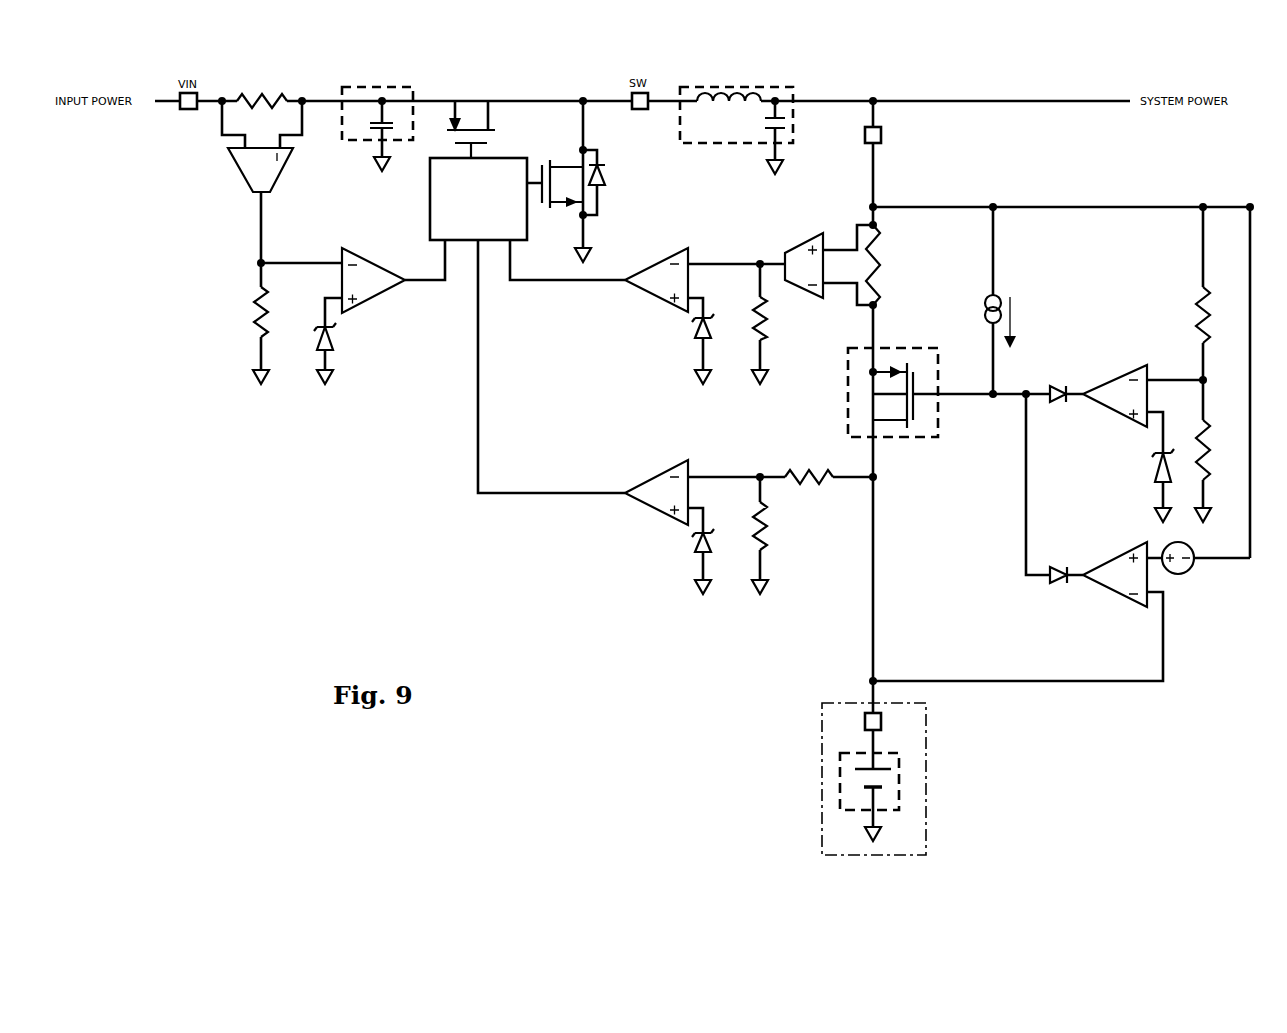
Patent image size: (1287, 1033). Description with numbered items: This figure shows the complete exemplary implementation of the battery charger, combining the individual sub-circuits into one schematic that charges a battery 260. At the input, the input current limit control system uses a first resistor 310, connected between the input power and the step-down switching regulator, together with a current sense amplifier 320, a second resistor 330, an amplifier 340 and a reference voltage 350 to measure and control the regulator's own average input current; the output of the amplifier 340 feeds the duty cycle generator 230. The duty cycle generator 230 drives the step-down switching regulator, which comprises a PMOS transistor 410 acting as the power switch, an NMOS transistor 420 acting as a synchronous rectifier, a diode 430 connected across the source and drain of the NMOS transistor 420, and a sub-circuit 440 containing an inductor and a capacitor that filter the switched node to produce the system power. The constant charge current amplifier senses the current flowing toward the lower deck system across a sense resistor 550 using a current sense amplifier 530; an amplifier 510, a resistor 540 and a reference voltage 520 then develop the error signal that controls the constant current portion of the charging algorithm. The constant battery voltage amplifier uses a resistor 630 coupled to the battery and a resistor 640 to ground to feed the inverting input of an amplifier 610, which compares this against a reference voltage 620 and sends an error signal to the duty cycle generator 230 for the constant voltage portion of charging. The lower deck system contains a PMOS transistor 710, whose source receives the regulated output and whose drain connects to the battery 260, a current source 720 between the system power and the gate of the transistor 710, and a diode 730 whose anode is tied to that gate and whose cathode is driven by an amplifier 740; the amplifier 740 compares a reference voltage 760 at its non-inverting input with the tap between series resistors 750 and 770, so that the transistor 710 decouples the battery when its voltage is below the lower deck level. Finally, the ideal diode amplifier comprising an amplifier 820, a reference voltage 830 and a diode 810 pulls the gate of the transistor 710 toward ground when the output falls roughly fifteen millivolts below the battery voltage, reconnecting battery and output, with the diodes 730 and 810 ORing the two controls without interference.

The resistor R1 310 is at (278, 90).
The current sense amplifier GM1 320 is at (237, 170).
The resistor R2 330 is at (253, 308).
The amplifier A1 340 is at (360, 252).
The reference voltage VREF1 350 is at (317, 347).
The PMOS transistor 410 is at (470, 95).
The duty cycle generator 230 is at (495, 155).
The NMOS transistor 420 is at (578, 197).
The diode 430 is at (608, 168).
The sub-circuit 440 is at (742, 83).
The amplifier A2 510 is at (687, 248).
The reference voltage VREF2 520 is at (720, 315).
The current sense amplifier GM2 530 is at (823, 232).
The resistor R4 540 is at (768, 302).
The resistor R3 550 is at (899, 266).
The amplifier A3 610 is at (688, 456).
The reference voltage VREF3 620 is at (693, 555).
The resistor R5 630 is at (795, 460).
The resistor R6 640 is at (767, 530).
The PMOS transistor MP2 710 is at (900, 343).
The current source I1 720 is at (1002, 293).
The diode D1 730 is at (1048, 370).
The amplifier A4 740 is at (1105, 383).
The resistor R7 750 is at (1196, 302).
The reference voltage VREF4 760 is at (1152, 482).
The resistor R8 770 is at (1210, 435).
The diode D2 810 is at (1050, 583).
The amplifier A5 820 is at (1103, 590).
The reference voltage VREF5 830 is at (1196, 562).
The battery 260 is at (926, 778).